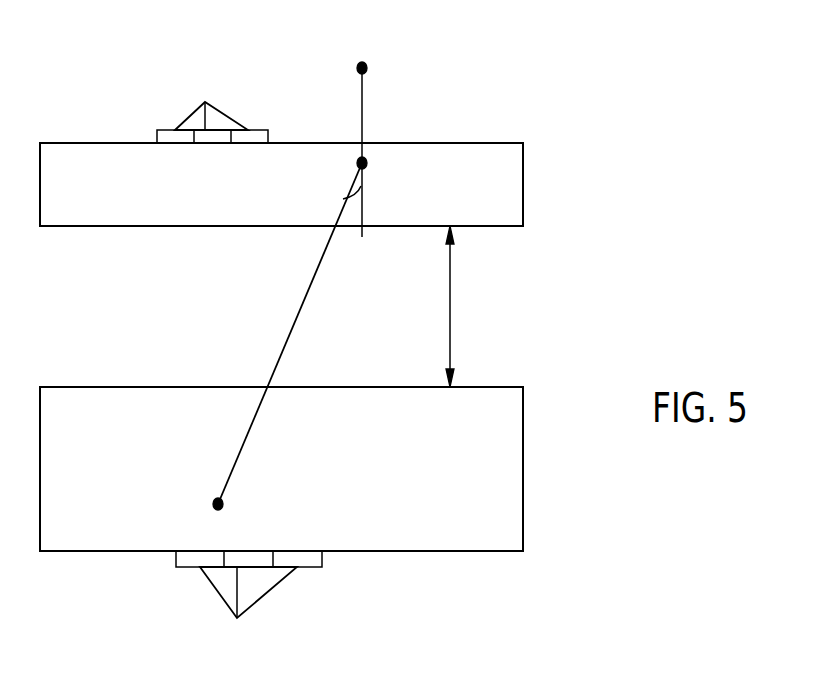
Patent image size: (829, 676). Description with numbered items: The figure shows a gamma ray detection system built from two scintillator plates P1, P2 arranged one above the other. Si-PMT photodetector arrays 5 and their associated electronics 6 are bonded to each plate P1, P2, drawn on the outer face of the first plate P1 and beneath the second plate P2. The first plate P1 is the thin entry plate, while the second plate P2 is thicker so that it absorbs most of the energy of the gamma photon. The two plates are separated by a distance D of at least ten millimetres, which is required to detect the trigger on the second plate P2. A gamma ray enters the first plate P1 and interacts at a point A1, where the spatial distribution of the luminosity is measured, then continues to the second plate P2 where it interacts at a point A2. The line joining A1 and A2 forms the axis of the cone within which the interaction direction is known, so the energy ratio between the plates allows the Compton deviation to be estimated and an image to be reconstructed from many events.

The Si-PMT photodetector arrays 5 is at (157, 130).
The associated electronics 6 is at (220, 110).
The first scintillator plate P1 is at (310, 184).
The second scintillator plate P2 is at (310, 469).
The luminosity distribution point on the first plate A1 is at (340, 178).
The luminosity distribution point on the second plate A2 is at (195, 503).
The distance between plates D is at (507, 306).